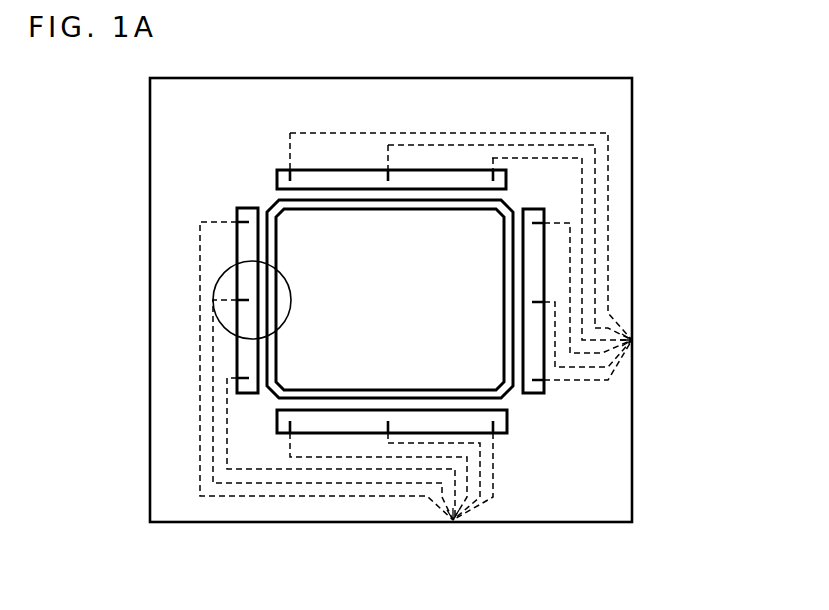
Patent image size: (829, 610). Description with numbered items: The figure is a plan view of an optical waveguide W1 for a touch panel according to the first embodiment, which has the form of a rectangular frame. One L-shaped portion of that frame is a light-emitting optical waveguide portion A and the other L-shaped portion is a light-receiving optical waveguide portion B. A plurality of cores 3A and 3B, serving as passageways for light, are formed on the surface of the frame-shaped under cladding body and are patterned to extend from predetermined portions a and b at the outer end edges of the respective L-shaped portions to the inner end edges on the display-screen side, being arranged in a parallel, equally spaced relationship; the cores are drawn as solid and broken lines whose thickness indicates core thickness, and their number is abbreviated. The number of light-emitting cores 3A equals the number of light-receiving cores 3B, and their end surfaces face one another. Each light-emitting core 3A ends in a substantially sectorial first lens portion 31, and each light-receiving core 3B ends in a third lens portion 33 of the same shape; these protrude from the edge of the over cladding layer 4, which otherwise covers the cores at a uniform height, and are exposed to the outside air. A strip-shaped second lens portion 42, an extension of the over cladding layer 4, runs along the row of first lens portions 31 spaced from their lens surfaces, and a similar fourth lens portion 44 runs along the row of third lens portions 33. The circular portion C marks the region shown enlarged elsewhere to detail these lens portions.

The optical waveguide for a touch panel W1 is at (140, 184).
The over cladding layer 4 is at (620, 470).
The circular portion C is at (223, 272).
The second lens portion 42 is at (353, 397).
The fourth lens portion 44 is at (423, 210).
The first lens portion 31 is at (247, 301).
The third lens portion 33 is at (493, 182).
The light-emitting cores 3A is at (346, 401).
The light-receiving cores 3B is at (501, 256).
The predetermined portion a is at (453, 521).
The predetermined portion b is at (632, 340).
The light-emitting optical waveguide portion A is at (153, 423).
The light-receiving optical waveguide portion B is at (628, 181).